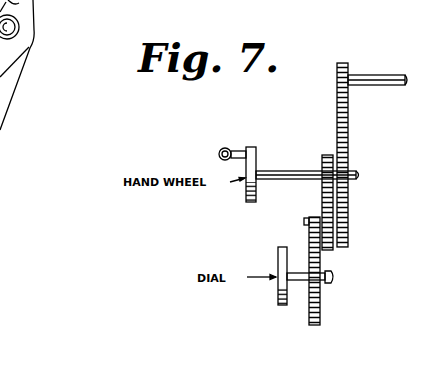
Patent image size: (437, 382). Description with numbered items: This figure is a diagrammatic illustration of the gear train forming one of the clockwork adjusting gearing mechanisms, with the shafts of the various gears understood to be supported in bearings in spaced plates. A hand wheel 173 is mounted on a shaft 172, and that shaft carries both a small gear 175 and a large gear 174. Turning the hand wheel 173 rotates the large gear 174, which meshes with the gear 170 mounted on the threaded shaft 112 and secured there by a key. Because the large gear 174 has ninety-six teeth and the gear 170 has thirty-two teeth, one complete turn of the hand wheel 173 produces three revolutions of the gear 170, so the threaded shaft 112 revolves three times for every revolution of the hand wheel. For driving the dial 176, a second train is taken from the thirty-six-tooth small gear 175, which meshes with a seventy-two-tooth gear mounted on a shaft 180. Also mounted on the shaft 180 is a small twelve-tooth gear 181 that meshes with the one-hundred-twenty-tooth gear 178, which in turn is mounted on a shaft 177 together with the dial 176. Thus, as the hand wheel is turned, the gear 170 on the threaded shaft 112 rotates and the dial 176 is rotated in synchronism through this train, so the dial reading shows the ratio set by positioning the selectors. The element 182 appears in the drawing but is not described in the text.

The gear 170 is at (341, 62).
The threaded shaft 112 is at (388, 75).
The large gear 174 is at (349, 128).
The hand wheel 173 is at (250, 148).
The shaft 172 is at (268, 170).
The small gear 175 is at (330, 153).
The gear 182 is at (322, 193).
The small gear 181 is at (309, 214).
The shaft 180 is at (305, 221).
The gear 178 is at (321, 308).
The dial 176 is at (278, 257).
The shaft 177 is at (333, 281).